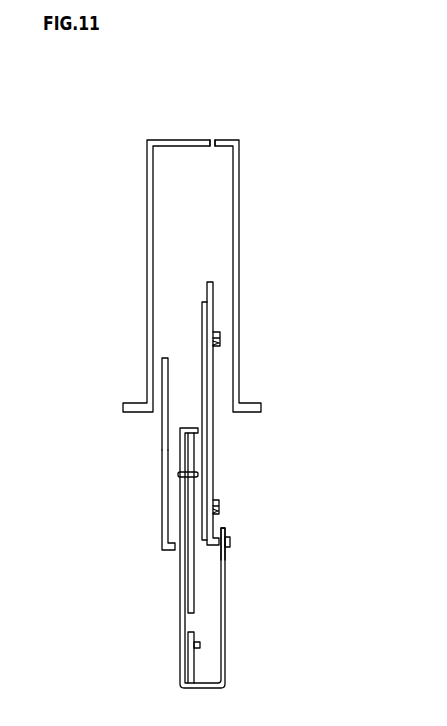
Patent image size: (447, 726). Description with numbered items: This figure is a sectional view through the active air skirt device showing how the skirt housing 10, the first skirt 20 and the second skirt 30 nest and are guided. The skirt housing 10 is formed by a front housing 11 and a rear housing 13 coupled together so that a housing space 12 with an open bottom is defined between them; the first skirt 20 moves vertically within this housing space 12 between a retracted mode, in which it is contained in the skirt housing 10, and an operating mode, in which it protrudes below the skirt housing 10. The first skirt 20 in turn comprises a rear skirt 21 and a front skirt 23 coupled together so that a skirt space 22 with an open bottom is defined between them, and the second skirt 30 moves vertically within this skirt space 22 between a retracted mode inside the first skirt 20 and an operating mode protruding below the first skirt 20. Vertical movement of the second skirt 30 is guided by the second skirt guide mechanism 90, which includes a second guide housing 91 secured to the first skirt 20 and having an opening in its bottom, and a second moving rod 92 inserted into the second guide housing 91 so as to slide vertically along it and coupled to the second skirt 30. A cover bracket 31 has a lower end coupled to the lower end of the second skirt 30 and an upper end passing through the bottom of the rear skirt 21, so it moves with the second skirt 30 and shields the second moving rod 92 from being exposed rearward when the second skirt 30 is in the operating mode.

The skirt housing 10 is at (198, 246).
The front housing 11 is at (147, 172).
The housing space 12 is at (186, 176).
The rear housing 13 is at (239, 168).
The first skirt 20 is at (177, 485).
The rear skirt 21 is at (212, 464).
The skirt space 22 is at (181, 403).
The front skirt 23 is at (162, 487).
The second skirt 30 is at (195, 558).
The cover bracket 31 is at (224, 648).
The second skirt guide mechanism 90 is at (200, 313).
The second guide housing 91 is at (203, 355).
The second moving rod 92 is at (190, 590).